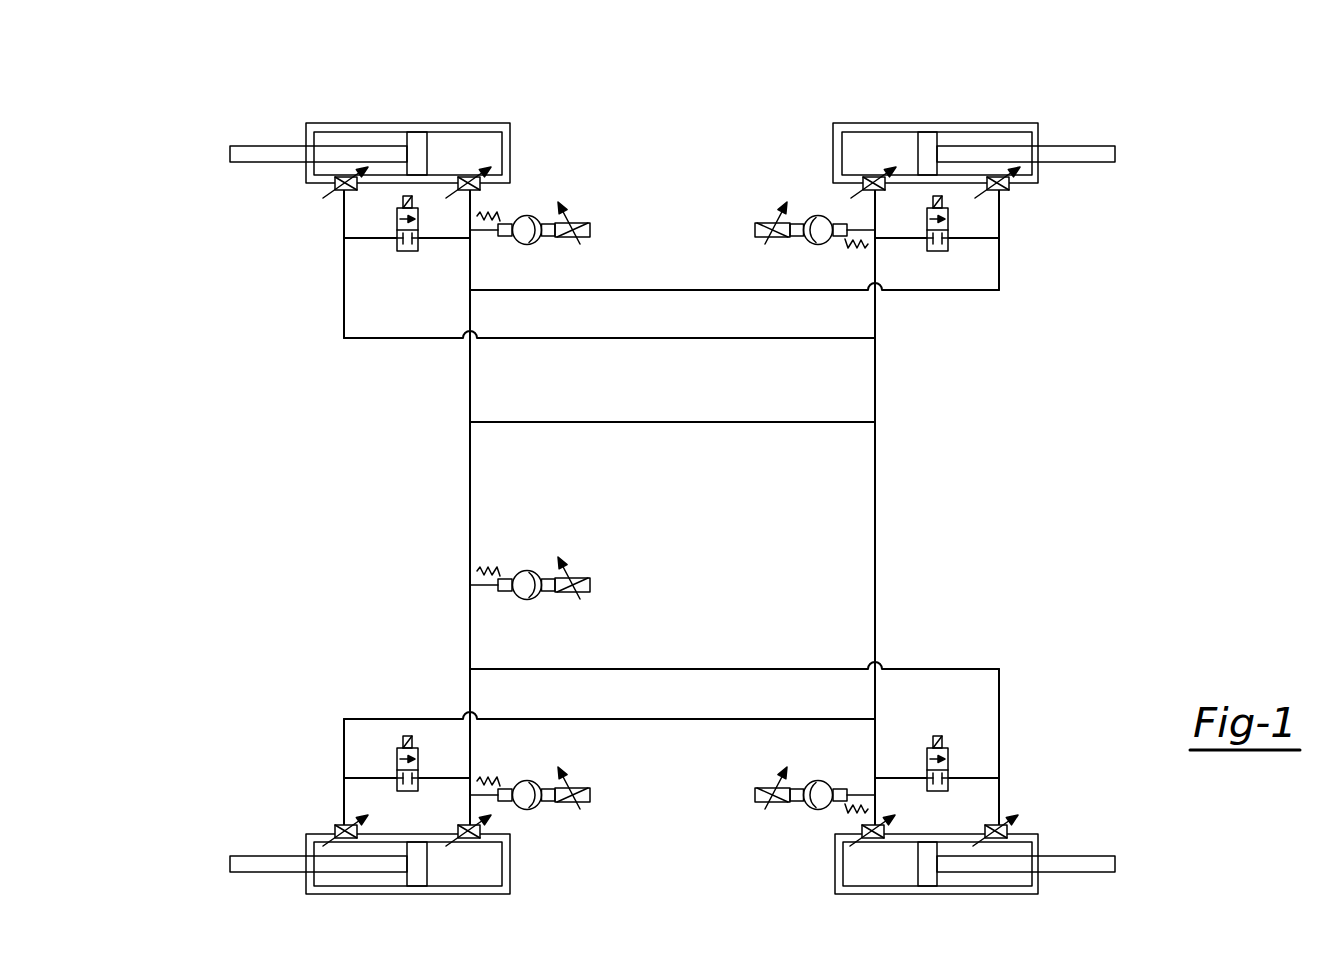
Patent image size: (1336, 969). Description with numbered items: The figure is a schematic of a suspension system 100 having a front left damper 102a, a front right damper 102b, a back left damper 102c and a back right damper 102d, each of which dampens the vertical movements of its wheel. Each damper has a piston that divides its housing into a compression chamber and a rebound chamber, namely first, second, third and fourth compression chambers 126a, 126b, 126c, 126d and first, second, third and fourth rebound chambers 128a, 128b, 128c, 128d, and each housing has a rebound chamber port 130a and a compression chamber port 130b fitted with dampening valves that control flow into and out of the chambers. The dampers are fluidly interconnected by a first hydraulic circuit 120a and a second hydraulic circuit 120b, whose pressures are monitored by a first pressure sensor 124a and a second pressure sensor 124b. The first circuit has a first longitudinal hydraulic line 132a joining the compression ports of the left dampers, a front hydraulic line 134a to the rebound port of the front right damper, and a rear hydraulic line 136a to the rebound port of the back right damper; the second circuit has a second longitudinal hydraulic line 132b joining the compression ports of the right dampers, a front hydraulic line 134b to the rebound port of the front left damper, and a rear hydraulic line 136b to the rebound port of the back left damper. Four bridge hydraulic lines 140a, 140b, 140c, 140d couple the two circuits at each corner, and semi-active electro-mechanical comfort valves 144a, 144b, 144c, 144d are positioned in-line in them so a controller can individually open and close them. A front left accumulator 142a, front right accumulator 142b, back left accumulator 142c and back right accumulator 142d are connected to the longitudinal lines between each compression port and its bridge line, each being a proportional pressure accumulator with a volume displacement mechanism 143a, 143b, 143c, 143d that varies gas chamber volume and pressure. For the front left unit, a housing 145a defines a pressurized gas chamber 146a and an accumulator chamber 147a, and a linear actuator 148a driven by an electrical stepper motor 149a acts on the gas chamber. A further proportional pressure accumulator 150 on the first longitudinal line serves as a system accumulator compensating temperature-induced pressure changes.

The suspension system 100 is at (186, 101).
The front left damper 102a is at (514, 114).
The front right damper 102b is at (826, 108).
The back left damper 102c is at (525, 890).
The back right damper 102d is at (828, 889).
The first hydraulic circuit 120a is at (452, 514).
The second hydraulic circuit 120b is at (860, 438).
The first pressure sensor 124a is at (463, 812).
The second pressure sensor 124b is at (884, 812).
The first compression chamber 126a is at (473, 140).
The second compression chamber 126b is at (903, 145).
The third compression chamber 126c is at (438, 872).
The fourth compression chamber 126d is at (877, 867).
The first rebound chamber 128a is at (337, 140).
The second rebound chamber 128b is at (1008, 140).
The third rebound chamber 128c is at (347, 877).
The fourth rebound chamber 128d is at (1003, 877).
The rebound chamber port 130a is at (334, 181).
The compression chamber port 130b is at (500, 182).
The first longitudinal hydraulic line 132a is at (471, 450).
The second longitudinal hydraulic line 132b is at (873, 455).
The front hydraulic line 134a is at (668, 291).
The front hydraulic line 134b is at (627, 340).
The rear hydraulic line 136a is at (672, 665).
The rear hydraulic line 136b is at (632, 722).
The front left bridge hydraulic line 140a is at (451, 243).
The front right bridge hydraulic line 140b is at (893, 243).
The back left bridge hydraulic line 140c is at (443, 777).
The back right bridge hydraulic line 140d is at (898, 777).
The front left accumulator 142a is at (538, 243).
The front right accumulator 142b is at (818, 246).
The back left accumulator 142c is at (536, 780).
The back right accumulator 142d is at (816, 780).
The volume displacement mechanism 143a is at (596, 230).
The volume displacement mechanism 143b is at (745, 229).
The volume displacement mechanism 143c is at (596, 797).
The volume displacement mechanism 143d is at (745, 795).
The front left comfort valve 144a is at (386, 219).
The front right comfort valve 144b is at (963, 250).
The back left comfort valve 144c is at (386, 748).
The back right comfort valve 144d is at (957, 744).
The housing 145a is at (512, 243).
The pressurized gas chamber 146a is at (529, 216).
The accumulator chamber 147a is at (513, 226).
The linear actuator 148a is at (573, 221).
The electrical stepper motor 149a is at (568, 239).
The proportional pressure accumulator 150 is at (536, 602).